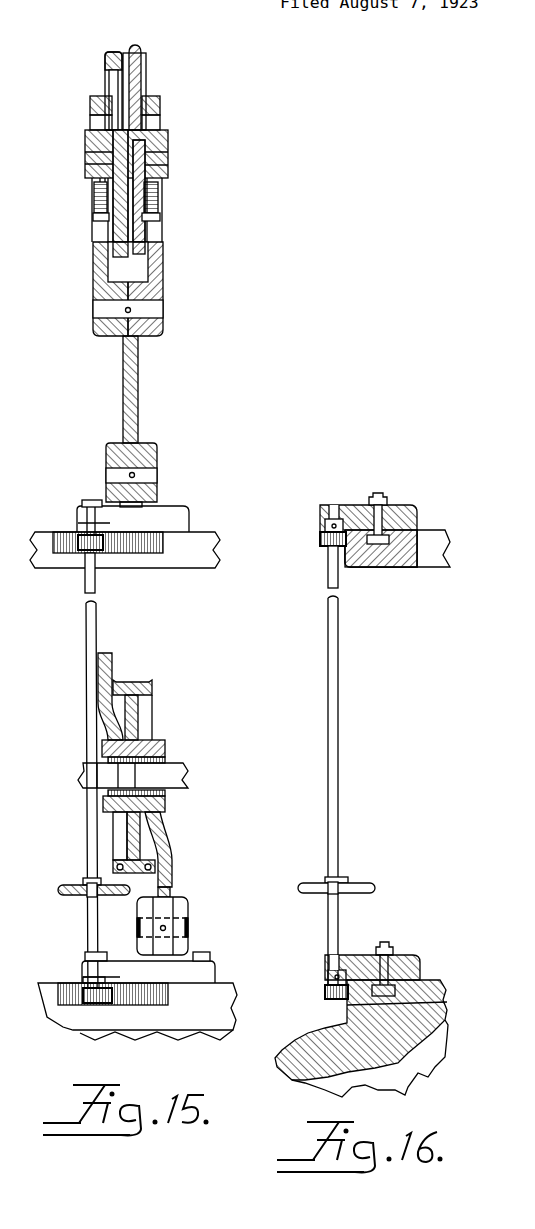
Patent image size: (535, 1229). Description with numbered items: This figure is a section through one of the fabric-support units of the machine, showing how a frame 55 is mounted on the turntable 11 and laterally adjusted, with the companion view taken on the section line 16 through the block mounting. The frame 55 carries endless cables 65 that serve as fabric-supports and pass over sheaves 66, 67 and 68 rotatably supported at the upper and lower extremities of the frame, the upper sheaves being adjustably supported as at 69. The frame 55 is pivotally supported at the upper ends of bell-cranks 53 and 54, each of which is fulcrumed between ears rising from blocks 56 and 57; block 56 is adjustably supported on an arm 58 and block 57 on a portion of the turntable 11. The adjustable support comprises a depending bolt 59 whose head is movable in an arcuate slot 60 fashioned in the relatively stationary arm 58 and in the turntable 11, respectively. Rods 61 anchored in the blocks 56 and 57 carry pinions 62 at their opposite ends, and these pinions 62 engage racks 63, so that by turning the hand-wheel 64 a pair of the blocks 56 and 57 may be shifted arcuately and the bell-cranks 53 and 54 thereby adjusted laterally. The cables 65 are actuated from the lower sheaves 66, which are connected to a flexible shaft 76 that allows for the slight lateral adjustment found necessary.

In FIG. 15, the turntable 11 is at (220, 990).
In FIG. 16, the turntable 11 is at (288, 1057).
In FIG. 15, the section line 16— 16 is at (88, 497).
In FIG. 15, the bell-crank 53 is at (164, 858).
In FIG. 15, the bell-crank 54 is at (133, 402).
In FIG. 15, the frame 55 is at (158, 285).
In FIG. 15, the block 56 is at (183, 950).
In FIG. 16, the block 56 is at (420, 968).
In FIG. 15, the block 57 is at (148, 494).
In FIG. 16, the block 57 is at (417, 523).
In FIG. 15, the arm 58 is at (200, 538).
In FIG. 16, the arm 58 is at (430, 567).
In FIG. 16, the depending bolt 59 is at (380, 510).
In FIG. 16, the arcuate slot 60 is at (380, 544).
In FIG. 15, the rod 61 is at (86, 722).
In FIG. 16, the rod 61 is at (337, 764).
In FIG. 15, the pinion 62 is at (80, 540).
In FIG. 16, the pinion 62 is at (320, 540).
In FIG. 15, the rack 63 is at (60, 553).
In FIG. 16, the rack 63 is at (332, 548).
In FIG. 15, the hand-wheel 64 is at (68, 884).
In FIG. 16, the hand-wheel 64 is at (366, 886).
In FIG. 15, the cable 65 is at (133, 47).
In FIG. 15, the sheave 66 is at (152, 690).
In FIG. 15, the sheave 67 is at (144, 59).
In FIG. 15, the sheave 68 is at (105, 68).
In FIG. 15, the adjustable sheave support 69 is at (94, 190).
In FIG. 15, the flexible shaft 76 is at (175, 776).